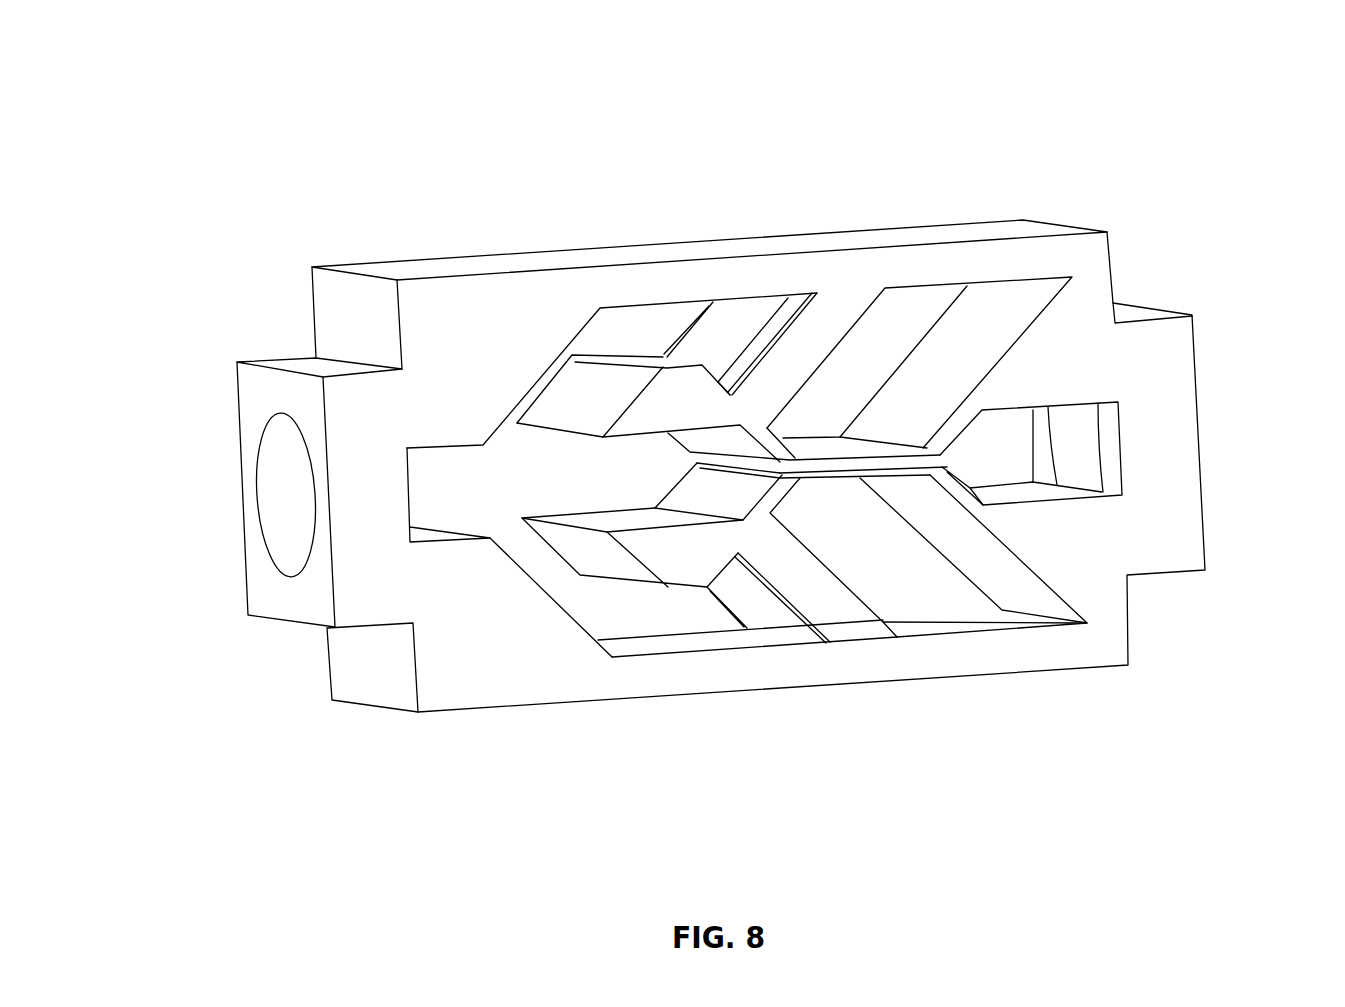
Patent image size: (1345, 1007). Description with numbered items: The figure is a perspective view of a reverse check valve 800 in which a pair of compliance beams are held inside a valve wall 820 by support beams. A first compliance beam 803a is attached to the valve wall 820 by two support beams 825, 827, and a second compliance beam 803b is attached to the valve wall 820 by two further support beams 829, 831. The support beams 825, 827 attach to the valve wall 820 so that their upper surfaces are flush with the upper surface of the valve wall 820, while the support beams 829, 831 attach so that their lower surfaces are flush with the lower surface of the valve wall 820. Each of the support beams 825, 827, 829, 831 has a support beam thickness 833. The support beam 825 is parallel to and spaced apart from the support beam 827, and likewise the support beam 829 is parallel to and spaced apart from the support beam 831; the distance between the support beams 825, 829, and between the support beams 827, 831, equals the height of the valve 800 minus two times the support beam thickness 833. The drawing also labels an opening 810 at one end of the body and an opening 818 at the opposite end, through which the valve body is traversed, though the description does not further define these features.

The valve 800 is at (1341, 54).
The compliance beam 803a is at (643, 347).
The compliance beam 803b is at (693, 600).
The inlet 810 is at (282, 432).
The outlet 818 is at (1105, 455).
The valve wall 820 is at (480, 300).
The support beam 825 is at (830, 318).
The support beam 827 is at (743, 325).
The support beam 829 is at (830, 600).
The support beam 831 is at (750, 593).
The support beam thickness 833 is at (787, 323).